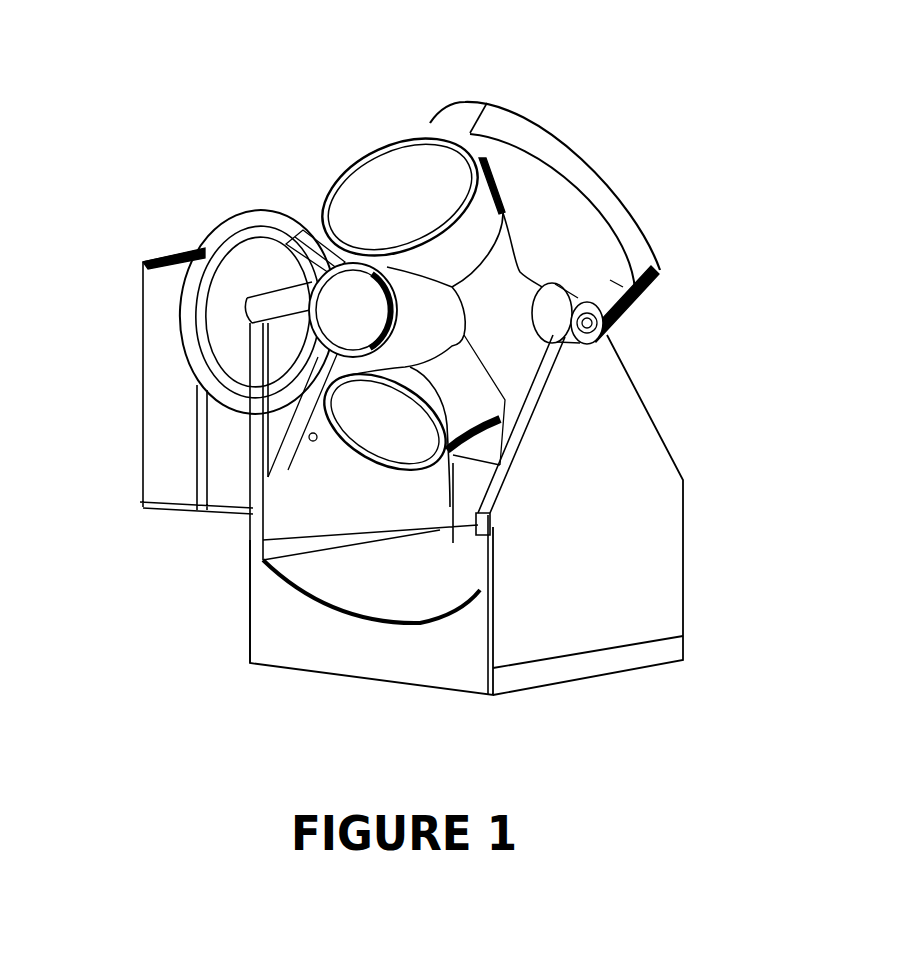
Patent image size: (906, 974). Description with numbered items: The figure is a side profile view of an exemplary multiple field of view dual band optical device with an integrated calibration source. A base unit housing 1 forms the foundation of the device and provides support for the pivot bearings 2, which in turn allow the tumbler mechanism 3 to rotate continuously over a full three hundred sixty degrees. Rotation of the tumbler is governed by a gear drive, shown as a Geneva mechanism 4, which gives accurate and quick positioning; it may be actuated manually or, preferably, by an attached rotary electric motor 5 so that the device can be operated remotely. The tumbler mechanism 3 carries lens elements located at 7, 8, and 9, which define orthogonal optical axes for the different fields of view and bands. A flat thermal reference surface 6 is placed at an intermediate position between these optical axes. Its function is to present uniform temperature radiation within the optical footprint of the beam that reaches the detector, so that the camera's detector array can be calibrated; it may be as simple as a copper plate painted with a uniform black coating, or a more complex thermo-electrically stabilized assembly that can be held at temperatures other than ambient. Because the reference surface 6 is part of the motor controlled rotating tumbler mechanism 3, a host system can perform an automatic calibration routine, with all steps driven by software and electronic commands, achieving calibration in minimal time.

The base unit housing 1 is at (693, 617).
The pivot bearings 2 is at (607, 334).
The tumbler mechanism 3 is at (642, 292).
The Geneva mechanism 4 is at (217, 213).
The rotary electric motor 5 is at (137, 330).
The flat thermal reference surface 6 is at (353, 302).
The lens elements 7 is at (420, 177).
The lens elements 8 is at (626, 175).
The lens elements 9 is at (382, 425).